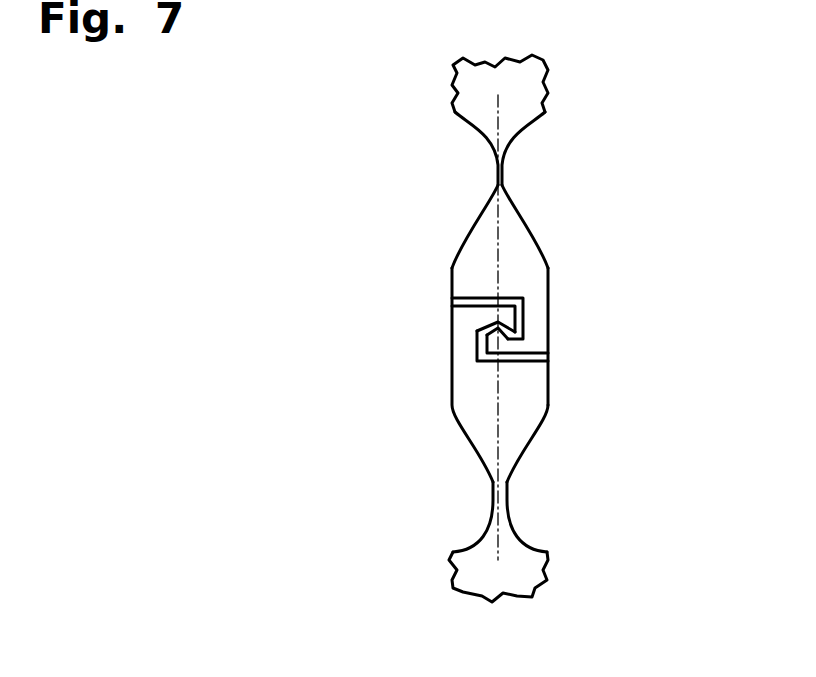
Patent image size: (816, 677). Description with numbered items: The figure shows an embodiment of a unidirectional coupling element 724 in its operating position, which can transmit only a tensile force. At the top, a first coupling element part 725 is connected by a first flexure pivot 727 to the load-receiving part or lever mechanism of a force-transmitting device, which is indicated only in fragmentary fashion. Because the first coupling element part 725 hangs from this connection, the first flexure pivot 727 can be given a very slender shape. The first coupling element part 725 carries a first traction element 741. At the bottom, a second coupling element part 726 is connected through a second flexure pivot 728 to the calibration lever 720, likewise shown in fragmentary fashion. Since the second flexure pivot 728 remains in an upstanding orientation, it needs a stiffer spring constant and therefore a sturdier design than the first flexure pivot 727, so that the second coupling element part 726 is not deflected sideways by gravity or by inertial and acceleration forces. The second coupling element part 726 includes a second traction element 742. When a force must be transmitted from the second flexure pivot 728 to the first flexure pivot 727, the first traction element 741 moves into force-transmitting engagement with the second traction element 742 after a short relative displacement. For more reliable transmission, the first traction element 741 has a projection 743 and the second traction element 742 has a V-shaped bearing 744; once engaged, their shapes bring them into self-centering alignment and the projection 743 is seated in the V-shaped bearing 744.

The unidirectional coupling element 724 is at (440, 166).
The first flexure pivot 727 is at (502, 174).
The first coupling element part 725 is at (513, 256).
The first traction element 741 is at (538, 320).
The second traction element 742 is at (462, 328).
The V-shaped bearing 744 is at (498, 321).
The projection 743 is at (500, 330).
The second coupling element part 726 is at (483, 417).
The second flexure pivot 728 is at (498, 496).
The calibration lever 720 is at (492, 567).